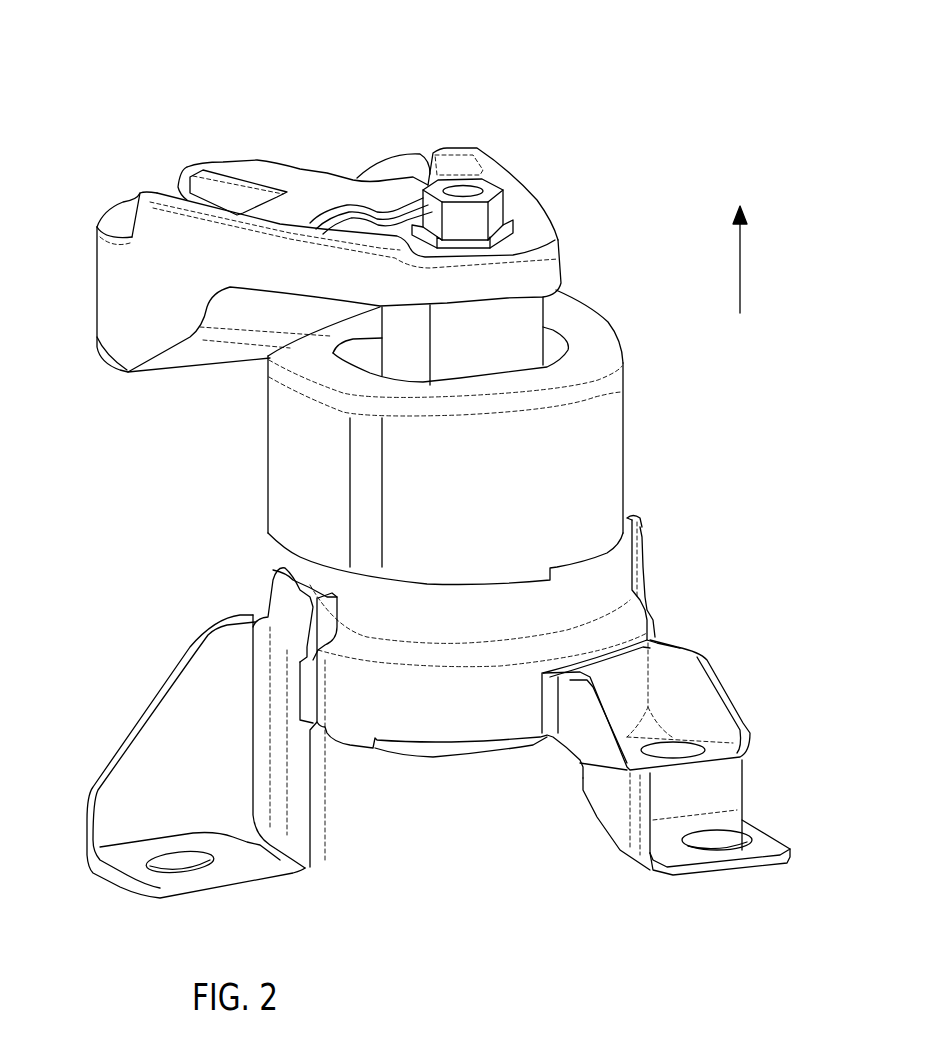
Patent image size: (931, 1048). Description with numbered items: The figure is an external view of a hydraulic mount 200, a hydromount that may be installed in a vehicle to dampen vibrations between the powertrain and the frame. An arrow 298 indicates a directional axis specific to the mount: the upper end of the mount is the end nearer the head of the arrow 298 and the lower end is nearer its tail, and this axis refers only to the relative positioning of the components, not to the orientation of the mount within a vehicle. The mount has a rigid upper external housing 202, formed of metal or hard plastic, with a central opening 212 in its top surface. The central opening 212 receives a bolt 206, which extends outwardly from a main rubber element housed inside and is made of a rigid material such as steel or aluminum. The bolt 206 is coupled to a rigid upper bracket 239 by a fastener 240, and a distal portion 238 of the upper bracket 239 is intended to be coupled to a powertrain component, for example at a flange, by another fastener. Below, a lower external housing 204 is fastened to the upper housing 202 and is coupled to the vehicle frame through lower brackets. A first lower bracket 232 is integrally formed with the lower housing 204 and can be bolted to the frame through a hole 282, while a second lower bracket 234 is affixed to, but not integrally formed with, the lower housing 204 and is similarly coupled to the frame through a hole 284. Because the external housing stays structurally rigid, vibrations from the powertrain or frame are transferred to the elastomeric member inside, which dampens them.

The hydraulic mount 200 is at (682, 76).
The upper external housing 202 is at (612, 428).
The lower external housing 204 is at (620, 578).
The bolt 206 is at (530, 330).
The central opening 212 is at (548, 357).
The first lower bracket 232 is at (703, 698).
The second lower bracket 234 is at (175, 698).
The distal portion 238 is at (127, 218).
The upper bracket 239 is at (515, 185).
The fastener 240 is at (437, 182).
The hole 282 is at (728, 837).
The hole 284 is at (143, 853).
The arrow 298 is at (742, 283).